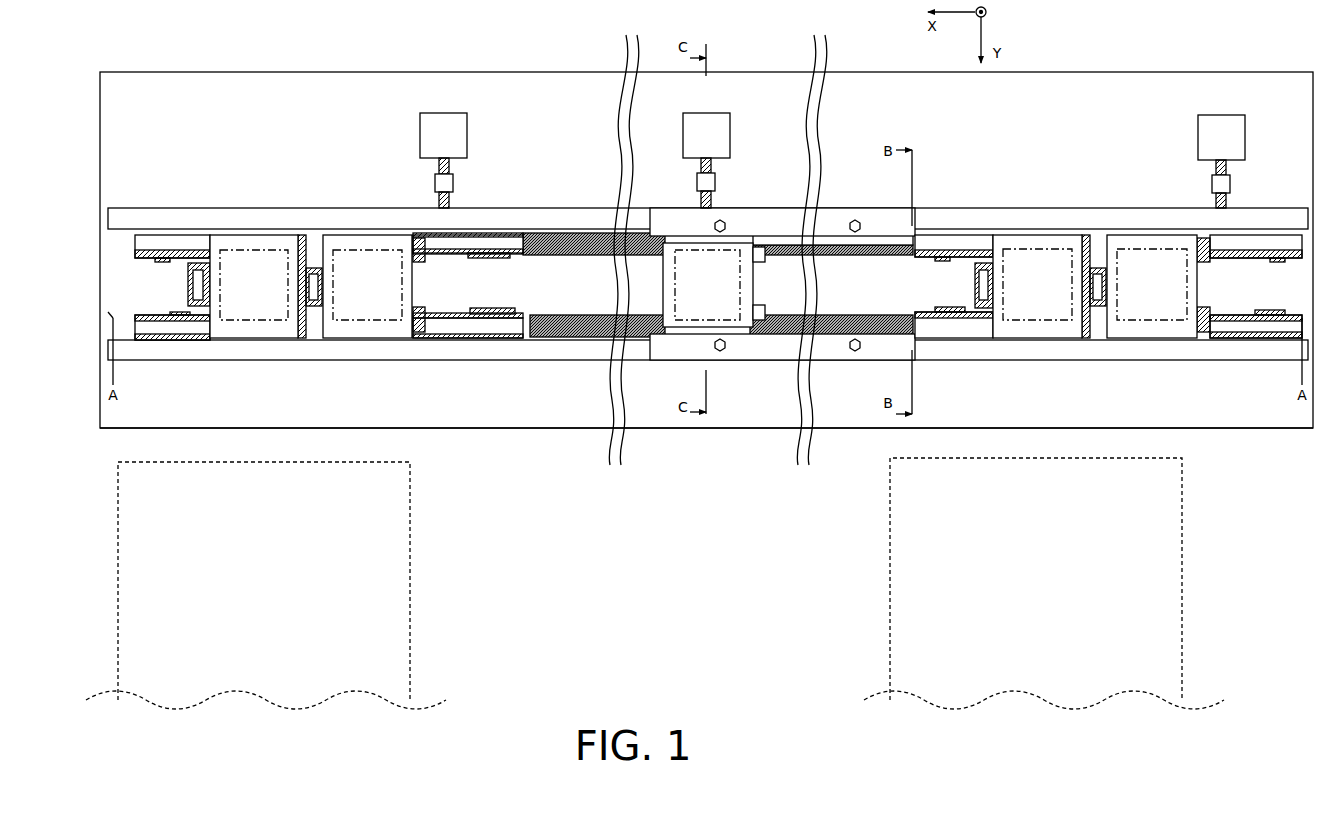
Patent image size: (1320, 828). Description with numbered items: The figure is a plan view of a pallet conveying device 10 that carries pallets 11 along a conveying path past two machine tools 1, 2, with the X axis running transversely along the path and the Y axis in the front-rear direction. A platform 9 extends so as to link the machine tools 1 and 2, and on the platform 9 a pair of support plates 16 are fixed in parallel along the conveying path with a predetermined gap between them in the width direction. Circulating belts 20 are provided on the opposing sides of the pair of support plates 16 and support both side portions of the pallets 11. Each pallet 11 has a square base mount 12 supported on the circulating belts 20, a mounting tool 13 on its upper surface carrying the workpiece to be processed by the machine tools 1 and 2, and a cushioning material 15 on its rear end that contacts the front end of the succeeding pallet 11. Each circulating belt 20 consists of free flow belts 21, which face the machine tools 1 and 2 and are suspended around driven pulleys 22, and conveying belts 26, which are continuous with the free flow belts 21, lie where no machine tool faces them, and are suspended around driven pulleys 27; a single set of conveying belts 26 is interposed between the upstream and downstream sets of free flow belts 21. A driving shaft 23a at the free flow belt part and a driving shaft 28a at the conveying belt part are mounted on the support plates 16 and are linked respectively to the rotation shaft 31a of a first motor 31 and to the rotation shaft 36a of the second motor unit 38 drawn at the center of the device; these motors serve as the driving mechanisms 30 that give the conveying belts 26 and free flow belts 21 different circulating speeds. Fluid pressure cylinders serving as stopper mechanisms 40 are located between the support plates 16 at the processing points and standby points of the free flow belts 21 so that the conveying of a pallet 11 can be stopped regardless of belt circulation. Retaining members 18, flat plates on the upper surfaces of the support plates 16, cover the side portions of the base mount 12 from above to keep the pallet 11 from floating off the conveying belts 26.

The machine tool 1 is at (1044, 583).
The machine tool 2 is at (266, 585).
The platform 9 is at (748, 430).
The pallet conveying device 10 is at (706, 221).
The pallet 11 is at (246, 230).
The base mount 12 is at (758, 258).
The mounting tool 13 is at (758, 310).
The cushioning material 15 is at (1202, 228).
The support plate 16 is at (766, 230).
The retaining member 18 is at (845, 208).
The circulating belt 20 is at (190, 343).
The free flow belt 21 is at (428, 258).
The driven pulley 22 is at (166, 262).
The driving shaft 23a is at (450, 193).
The conveying belt 26 is at (578, 255).
The driven pulley 27 is at (550, 256).
The driving shaft 28a is at (700, 192).
The driving mechanism 30 is at (412, 122).
The first motor 31 is at (448, 112).
The rotation shaft 31a is at (450, 165).
The rotation shaft 36a is at (700, 168).
The center motor 38 is at (710, 112).
The stopper mechanism 40 is at (200, 340).